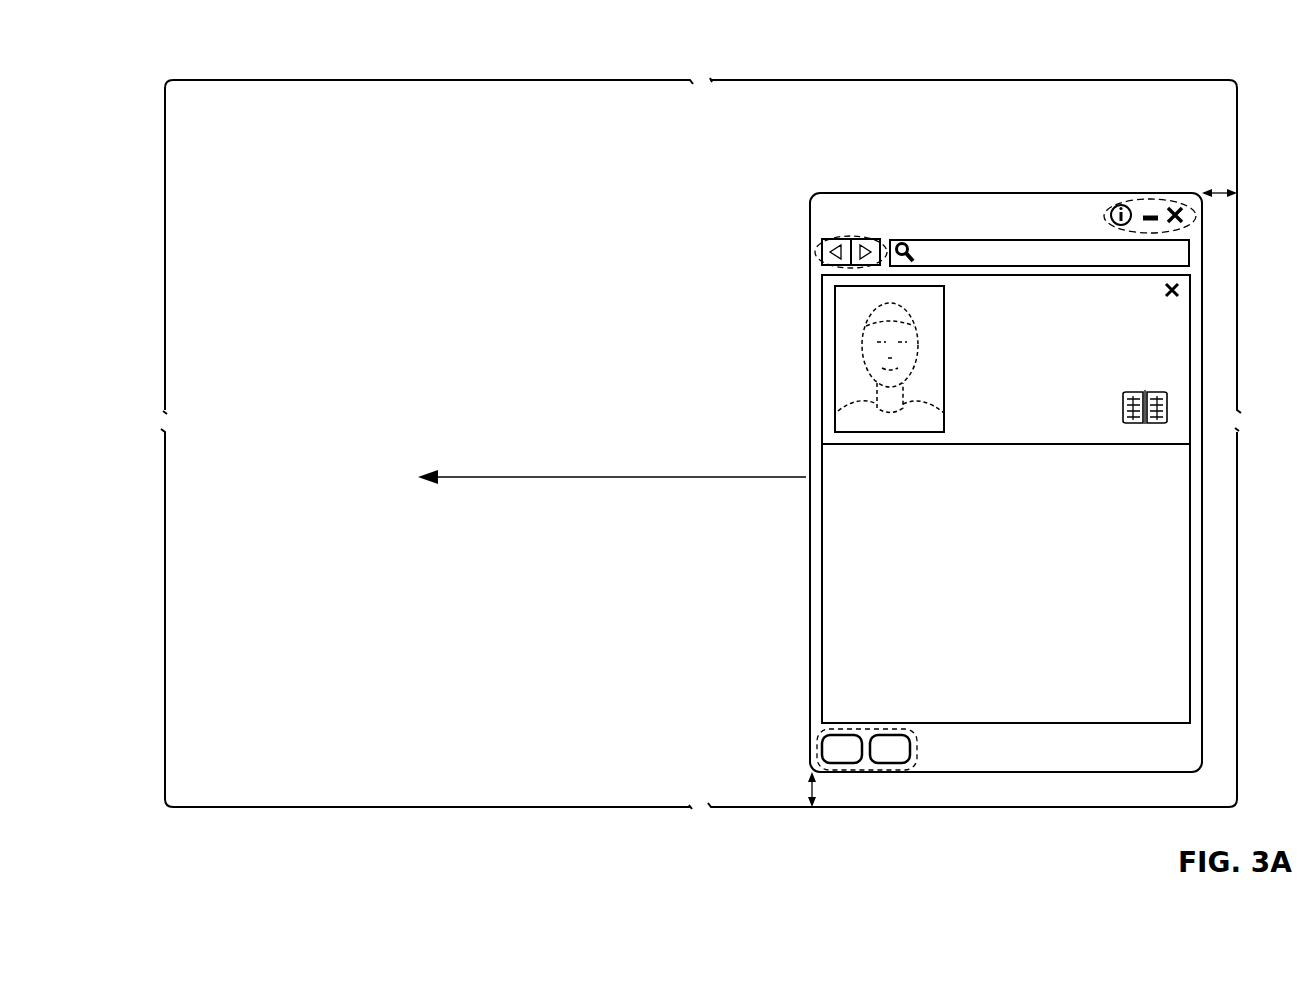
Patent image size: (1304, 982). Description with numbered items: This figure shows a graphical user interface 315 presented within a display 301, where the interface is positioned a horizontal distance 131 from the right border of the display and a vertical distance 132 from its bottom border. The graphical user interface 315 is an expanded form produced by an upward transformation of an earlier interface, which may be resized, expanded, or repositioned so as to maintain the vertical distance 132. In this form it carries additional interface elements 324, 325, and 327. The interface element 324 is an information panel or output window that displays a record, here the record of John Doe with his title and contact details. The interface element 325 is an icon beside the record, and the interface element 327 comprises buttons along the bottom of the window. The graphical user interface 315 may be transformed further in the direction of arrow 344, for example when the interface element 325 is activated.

The display screen 301 is at (204, 56).
The graphical user interface 315 is at (936, 180).
The horizontal distance 131 is at (1219, 196).
The vertical distance 132 is at (808, 789).
The arrow 344 is at (589, 476).
The interface element 324 is at (808, 275).
The interface element 325 is at (1116, 407).
The interface element 327 is at (885, 768).